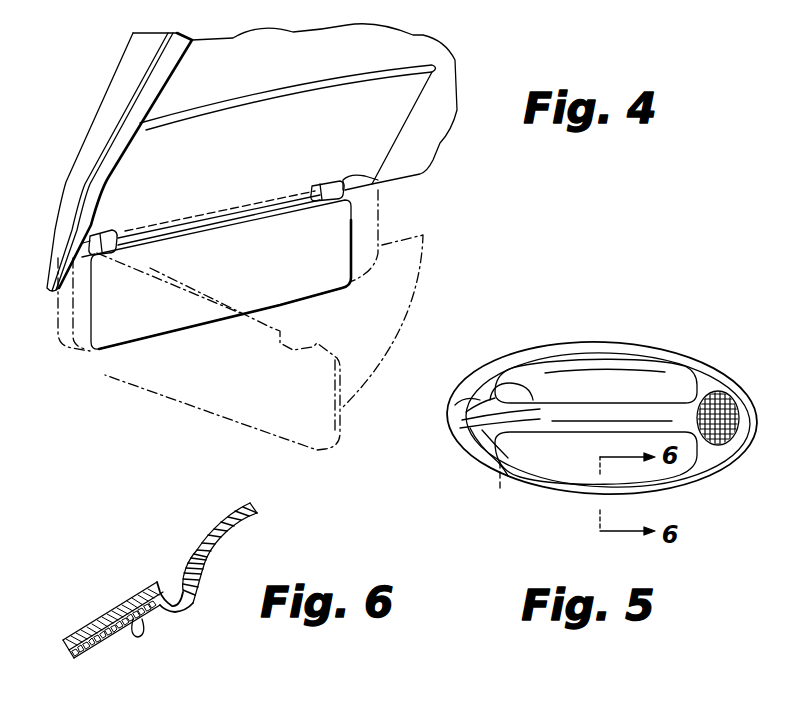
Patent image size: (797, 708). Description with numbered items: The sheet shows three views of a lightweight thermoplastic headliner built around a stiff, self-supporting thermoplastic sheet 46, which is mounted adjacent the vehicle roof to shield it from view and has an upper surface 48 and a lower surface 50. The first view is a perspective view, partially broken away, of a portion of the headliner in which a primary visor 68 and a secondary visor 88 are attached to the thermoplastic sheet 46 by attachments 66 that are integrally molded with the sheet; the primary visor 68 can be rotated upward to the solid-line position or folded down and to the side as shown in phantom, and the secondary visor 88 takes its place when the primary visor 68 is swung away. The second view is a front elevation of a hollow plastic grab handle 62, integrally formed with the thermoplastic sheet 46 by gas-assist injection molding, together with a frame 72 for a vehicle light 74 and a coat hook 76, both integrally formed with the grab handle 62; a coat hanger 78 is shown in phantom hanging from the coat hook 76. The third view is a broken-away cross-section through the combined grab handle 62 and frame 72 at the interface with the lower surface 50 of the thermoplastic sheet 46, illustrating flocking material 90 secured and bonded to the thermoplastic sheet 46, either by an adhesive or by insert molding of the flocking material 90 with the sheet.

In FIG. 4, the thermoplastic sheet 46 is at (107, 77).
In FIG. 6, the thermoplastic sheet 46 is at (98, 616).
In FIG. 4, the upper surface 48 is at (77, 160).
In FIG. 6, the upper surface 48 is at (67, 633).
In FIG. 4, the lower surface 50 is at (230, 73).
In FIG. 6, the lower surface 50 is at (123, 613).
In FIG. 5, the grab handle 62 is at (587, 425).
In FIG. 6, the grab handle 62 is at (220, 518).
In FIG. 4, the attachment 66 is at (99, 232).
In FIG. 4, the primary visor 68 is at (388, 143).
In FIG. 5, the frame 72 is at (713, 380).
In FIG. 5, the light 74 is at (730, 393).
In FIG. 5, the coat hook 76 is at (465, 435).
In FIG. 5, the coat hanger 78 is at (500, 484).
In FIG. 4, the secondary visor 88 is at (287, 277).
In FIG. 6, the flocking material 90 is at (112, 638).